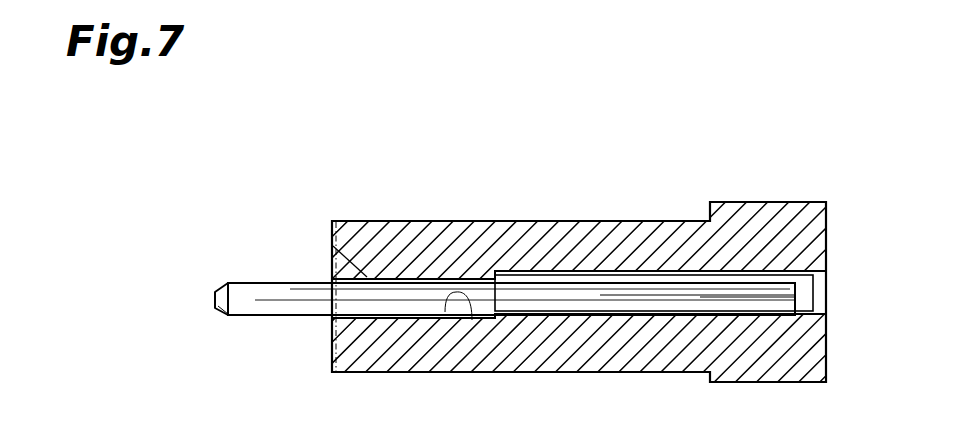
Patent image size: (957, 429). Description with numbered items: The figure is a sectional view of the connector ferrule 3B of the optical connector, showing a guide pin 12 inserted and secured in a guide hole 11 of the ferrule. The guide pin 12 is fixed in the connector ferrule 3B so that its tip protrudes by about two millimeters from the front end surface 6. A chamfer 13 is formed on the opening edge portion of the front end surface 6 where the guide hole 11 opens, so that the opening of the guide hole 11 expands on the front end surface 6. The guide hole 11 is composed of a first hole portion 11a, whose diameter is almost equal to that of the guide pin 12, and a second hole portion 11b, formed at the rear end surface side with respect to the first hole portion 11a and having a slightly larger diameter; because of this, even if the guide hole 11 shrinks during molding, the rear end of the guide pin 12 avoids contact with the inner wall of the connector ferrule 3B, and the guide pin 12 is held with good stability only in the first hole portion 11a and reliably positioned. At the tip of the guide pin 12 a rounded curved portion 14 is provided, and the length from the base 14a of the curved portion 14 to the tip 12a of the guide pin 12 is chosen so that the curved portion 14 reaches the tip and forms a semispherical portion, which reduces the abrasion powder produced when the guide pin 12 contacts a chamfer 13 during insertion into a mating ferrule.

The connector ferrule 3B is at (728, 202).
The front end surface 6 is at (332, 240).
The chamfer 13 is at (356, 276).
The guide hole 11 is at (663, 288).
The first hole portion 11a is at (472, 320).
The second hole portion 11b is at (703, 297).
The guide pin 12 is at (277, 290).
The tip 12a is at (213, 298).
The curved portion 14 is at (214, 291).
The base 14a is at (218, 312).